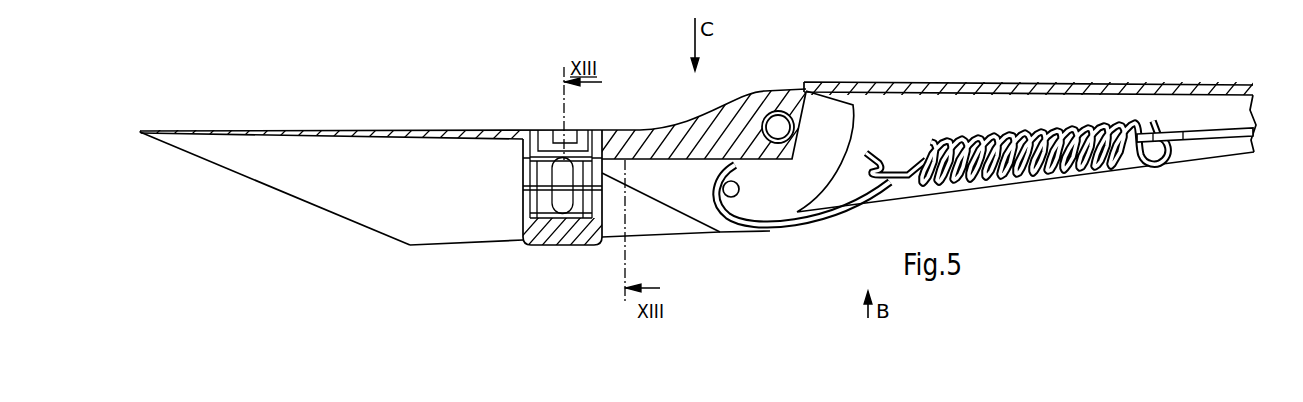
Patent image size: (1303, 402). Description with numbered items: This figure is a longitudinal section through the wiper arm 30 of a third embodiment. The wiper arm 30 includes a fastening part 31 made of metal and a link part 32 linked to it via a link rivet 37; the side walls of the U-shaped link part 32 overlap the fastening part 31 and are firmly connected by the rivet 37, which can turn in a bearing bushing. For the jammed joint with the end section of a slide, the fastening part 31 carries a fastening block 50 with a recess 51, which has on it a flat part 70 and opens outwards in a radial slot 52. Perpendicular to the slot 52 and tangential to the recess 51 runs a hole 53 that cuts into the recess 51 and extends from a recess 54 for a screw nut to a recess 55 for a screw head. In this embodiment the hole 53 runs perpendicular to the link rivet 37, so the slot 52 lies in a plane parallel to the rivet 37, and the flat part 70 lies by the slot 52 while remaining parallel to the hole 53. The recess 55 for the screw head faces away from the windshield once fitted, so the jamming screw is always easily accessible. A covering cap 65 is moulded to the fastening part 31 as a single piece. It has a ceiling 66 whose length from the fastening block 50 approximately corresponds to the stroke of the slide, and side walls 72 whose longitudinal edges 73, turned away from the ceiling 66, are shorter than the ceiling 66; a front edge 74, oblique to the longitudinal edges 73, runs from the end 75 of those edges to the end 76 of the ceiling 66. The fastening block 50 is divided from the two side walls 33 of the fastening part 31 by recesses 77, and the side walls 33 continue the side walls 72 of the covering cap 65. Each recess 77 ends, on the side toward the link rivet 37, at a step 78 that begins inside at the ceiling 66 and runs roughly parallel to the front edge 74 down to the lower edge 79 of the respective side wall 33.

The wiper arm 30 is at (978, 81).
The fastening part 31 is at (710, 122).
The link part 32 is at (1042, 106).
The side walls 33 is at (647, 243).
The link rivet 37 is at (780, 122).
The fastening block 50 is at (597, 243).
The recess 51 is at (602, 203).
The radial slot 52 is at (523, 187).
The hole 53 is at (572, 180).
The recess for screw nut 54 is at (548, 247).
The recess for screw head 55 is at (583, 130).
The covering cap 65 is at (347, 128).
The ceiling 66 is at (392, 130).
The flat part 70 is at (537, 203).
The side walls 72 is at (383, 206).
The longitudinal edges 73 is at (473, 247).
The front edge 74 is at (297, 203).
The end of longitudinal edges 75 is at (410, 247).
The end of ceiling 76 is at (140, 136).
The recesses 77 is at (673, 225).
The step 78 is at (657, 202).
The lower edge 79 is at (745, 233).